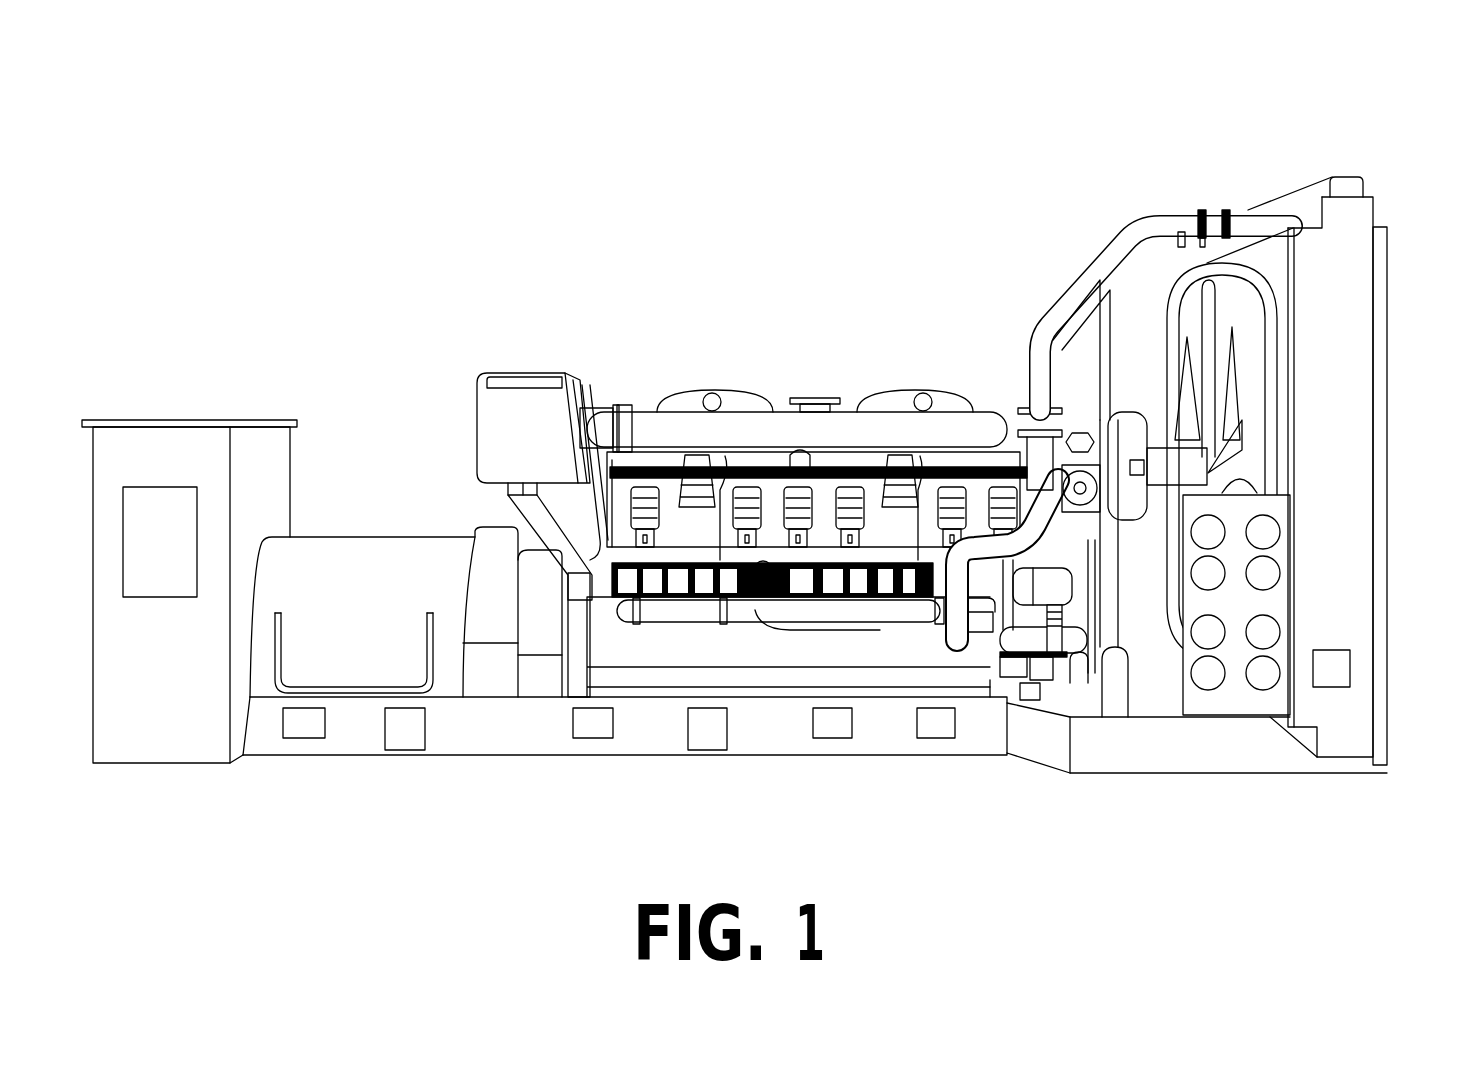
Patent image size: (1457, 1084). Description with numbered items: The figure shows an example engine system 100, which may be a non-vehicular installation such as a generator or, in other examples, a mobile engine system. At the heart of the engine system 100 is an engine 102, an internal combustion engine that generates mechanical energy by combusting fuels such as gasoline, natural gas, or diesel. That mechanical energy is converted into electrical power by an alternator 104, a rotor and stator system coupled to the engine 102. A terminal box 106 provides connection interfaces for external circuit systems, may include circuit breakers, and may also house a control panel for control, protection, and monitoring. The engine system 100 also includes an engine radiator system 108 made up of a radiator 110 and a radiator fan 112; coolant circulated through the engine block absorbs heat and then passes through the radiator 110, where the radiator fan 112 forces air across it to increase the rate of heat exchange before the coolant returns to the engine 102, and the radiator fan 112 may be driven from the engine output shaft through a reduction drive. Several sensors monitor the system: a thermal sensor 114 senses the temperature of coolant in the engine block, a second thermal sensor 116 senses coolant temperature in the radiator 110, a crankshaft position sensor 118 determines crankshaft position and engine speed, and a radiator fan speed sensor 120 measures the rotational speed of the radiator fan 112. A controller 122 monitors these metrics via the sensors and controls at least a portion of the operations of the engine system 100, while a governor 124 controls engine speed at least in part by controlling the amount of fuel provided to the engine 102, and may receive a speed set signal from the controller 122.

The engine system 100 is at (208, 82).
The engine 102 is at (760, 370).
The alternator 104 is at (360, 528).
The terminal box 106 is at (176, 404).
The engine radiator system 108 is at (1212, 182).
The radiator 110 is at (1348, 288).
The radiator fan 112 is at (1207, 283).
The thermal sensor 114 is at (973, 628).
The second thermal sensor 116 is at (1350, 668).
The crankshaft position sensor 118 is at (832, 578).
The radiator fan speed sensor 120 is at (1110, 427).
The controller 122 is at (160, 542).
The governor 124 is at (1040, 595).